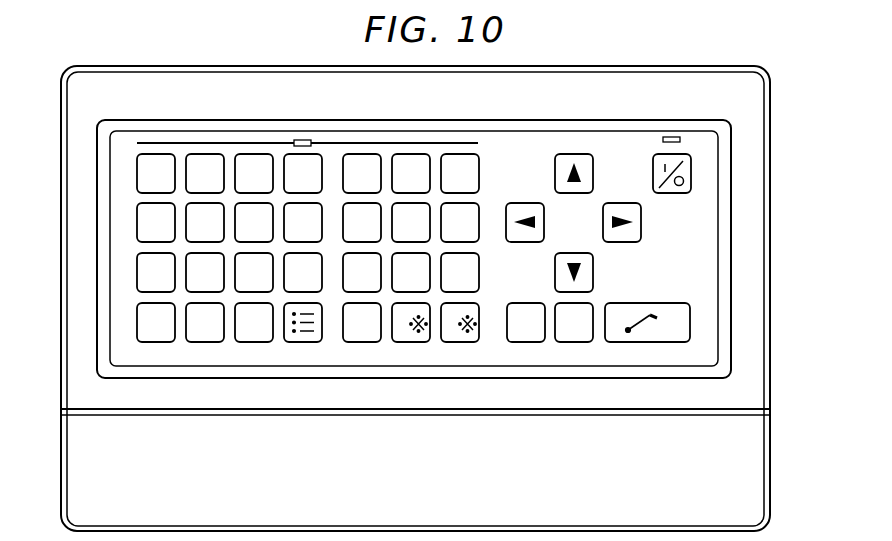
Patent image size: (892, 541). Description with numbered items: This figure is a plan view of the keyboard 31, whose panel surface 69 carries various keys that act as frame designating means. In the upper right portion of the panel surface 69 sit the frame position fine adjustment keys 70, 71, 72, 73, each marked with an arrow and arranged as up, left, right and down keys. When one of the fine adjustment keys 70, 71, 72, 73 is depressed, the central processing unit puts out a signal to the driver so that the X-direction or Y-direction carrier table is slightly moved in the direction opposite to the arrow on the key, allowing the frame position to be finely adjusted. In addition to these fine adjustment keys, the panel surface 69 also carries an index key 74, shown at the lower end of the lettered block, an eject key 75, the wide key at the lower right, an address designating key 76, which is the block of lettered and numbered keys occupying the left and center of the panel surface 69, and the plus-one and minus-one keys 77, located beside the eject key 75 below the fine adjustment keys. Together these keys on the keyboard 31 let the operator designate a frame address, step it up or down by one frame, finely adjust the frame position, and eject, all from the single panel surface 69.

The keyboard 31 is at (679, 66).
The panel surface 69 is at (630, 86).
The frame position fine adjustment key 70 is at (573, 152).
The frame position fine adjustment key 71 is at (521, 202).
The frame position fine adjustment key 72 is at (596, 273).
The frame position fine adjustment key 73 is at (619, 202).
The index key 74 is at (302, 345).
The eject key 75 is at (647, 344).
The address designating key 76 is at (205, 153).
The +1 and −1 keys 77 is at (527, 344).